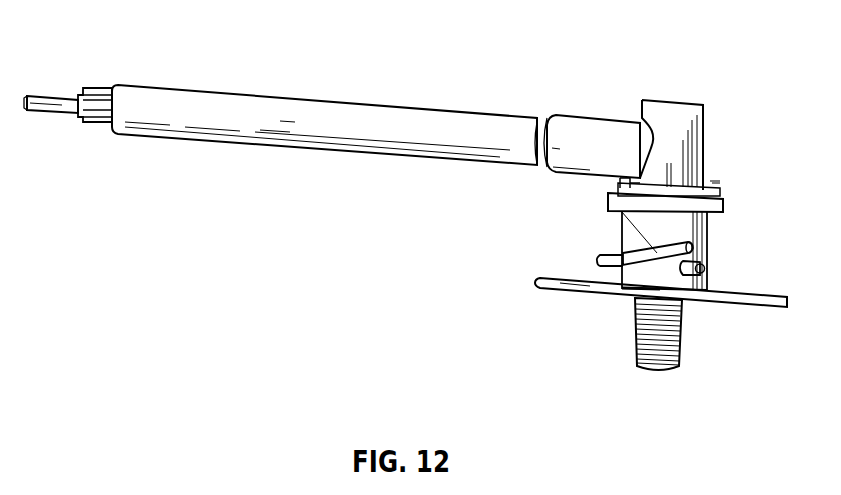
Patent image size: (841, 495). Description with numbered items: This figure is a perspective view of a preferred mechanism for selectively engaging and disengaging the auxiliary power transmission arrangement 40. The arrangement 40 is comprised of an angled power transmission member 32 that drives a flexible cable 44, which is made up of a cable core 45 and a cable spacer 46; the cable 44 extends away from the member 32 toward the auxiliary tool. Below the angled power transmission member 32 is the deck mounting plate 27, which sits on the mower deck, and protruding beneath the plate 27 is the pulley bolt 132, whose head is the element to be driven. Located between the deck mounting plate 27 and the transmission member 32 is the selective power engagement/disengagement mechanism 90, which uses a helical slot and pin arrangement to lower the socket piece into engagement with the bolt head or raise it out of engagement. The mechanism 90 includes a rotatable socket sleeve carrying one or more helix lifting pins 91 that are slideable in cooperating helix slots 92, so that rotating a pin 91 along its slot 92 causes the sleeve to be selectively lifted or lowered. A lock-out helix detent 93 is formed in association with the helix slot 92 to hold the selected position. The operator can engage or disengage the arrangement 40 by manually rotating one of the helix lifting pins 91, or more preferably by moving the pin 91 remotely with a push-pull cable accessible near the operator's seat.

The deck mounting plate 27 is at (548, 288).
The angled power transmission member 32 is at (669, 120).
The auxiliary power transmission arrangement 40 is at (566, 95).
The flexible cable 44 is at (338, 112).
The cable core 45 is at (50, 84).
The cable spacer 46 is at (98, 85).
The selective power engagement/disengagement mechanism 90 is at (713, 226).
The helix lifting pin 91 is at (600, 261).
The helix slot 92 is at (657, 252).
The lock-out helix detent 93 is at (693, 249).
The pulley bolt 132 is at (682, 334).